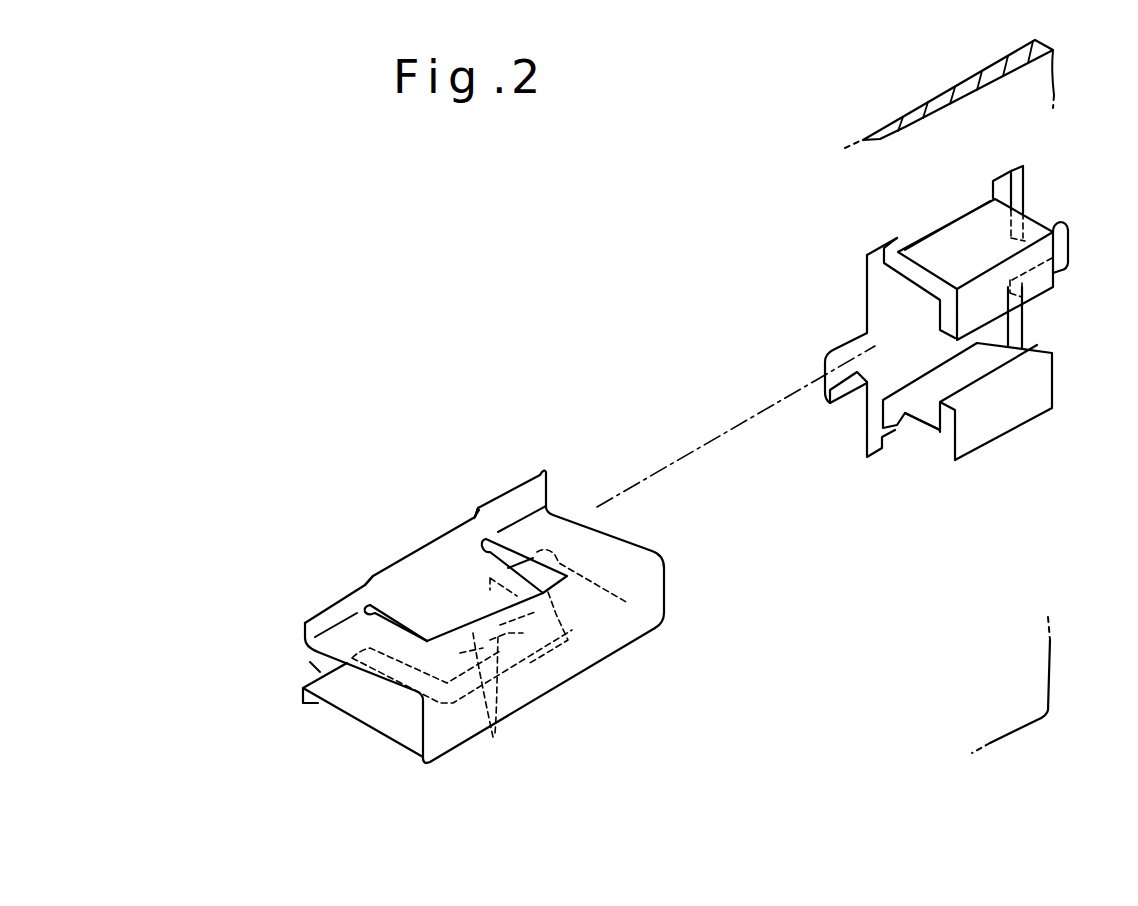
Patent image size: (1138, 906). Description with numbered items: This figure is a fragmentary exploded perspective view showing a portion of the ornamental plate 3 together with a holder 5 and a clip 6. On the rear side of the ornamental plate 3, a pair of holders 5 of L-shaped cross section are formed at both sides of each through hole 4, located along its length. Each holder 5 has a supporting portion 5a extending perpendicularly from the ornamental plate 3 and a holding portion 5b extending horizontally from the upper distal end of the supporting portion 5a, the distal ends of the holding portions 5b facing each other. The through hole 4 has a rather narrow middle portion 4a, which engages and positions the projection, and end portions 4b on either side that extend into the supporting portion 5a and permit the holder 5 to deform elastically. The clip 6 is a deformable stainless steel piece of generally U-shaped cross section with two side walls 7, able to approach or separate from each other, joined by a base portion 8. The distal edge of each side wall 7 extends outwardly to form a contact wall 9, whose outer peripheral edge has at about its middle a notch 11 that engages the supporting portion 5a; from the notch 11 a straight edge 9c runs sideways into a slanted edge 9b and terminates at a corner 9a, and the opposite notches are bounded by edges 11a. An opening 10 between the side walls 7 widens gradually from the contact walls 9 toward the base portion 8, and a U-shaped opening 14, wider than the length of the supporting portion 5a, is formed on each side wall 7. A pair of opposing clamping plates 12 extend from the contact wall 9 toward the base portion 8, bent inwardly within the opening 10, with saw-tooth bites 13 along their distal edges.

The ornamental plate 3 is at (1069, 83).
The through hole 4 is at (1018, 323).
The middle portion 4a is at (1053, 250).
The end portions 4b is at (873, 303).
The holder 5 is at (928, 245).
The supporting portion 5a is at (953, 235).
The holding portion 5b is at (1057, 247).
The clip 6 is at (655, 672).
The side walls 7 is at (383, 738).
The base portion 8 is at (548, 682).
The contact wall 9 is at (357, 586).
The corner 9a is at (547, 469).
The slanted edge 9b is at (528, 506).
The straight edge 9c is at (477, 514).
The opening 10 is at (325, 673).
The notch 11 is at (453, 530).
The edges 11a is at (425, 546).
The clamping plates 12 is at (410, 583).
The bites 13 is at (490, 708).
The opening 14 is at (550, 571).